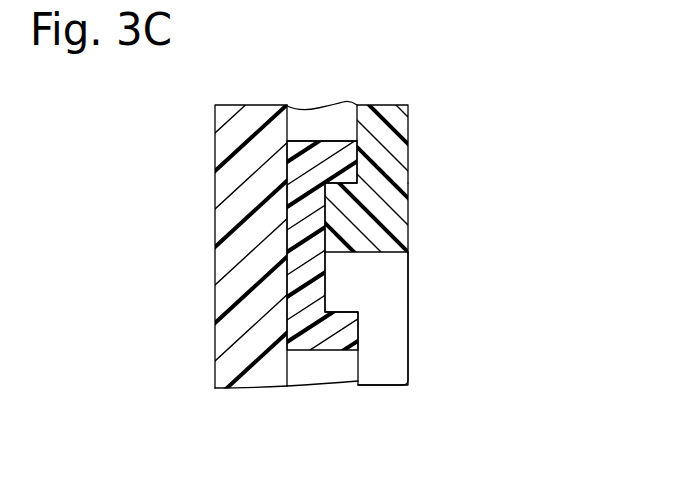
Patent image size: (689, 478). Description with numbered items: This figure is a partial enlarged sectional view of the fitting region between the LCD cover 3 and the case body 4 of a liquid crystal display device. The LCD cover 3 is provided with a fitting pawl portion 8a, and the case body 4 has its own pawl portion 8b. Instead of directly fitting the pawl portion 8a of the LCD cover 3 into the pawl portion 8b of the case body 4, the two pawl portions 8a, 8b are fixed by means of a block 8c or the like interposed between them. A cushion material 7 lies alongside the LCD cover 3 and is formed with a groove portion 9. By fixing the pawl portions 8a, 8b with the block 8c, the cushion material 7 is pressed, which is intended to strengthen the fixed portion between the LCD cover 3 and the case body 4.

The LCD cover 3 is at (404, 123).
The case body 4 is at (410, 368).
The cushion material 7 is at (255, 373).
The fitting pawl portion 8a is at (347, 200).
The pawl portion 8b is at (390, 293).
The block 8c is at (330, 337).
The groove portion 9 is at (322, 123).